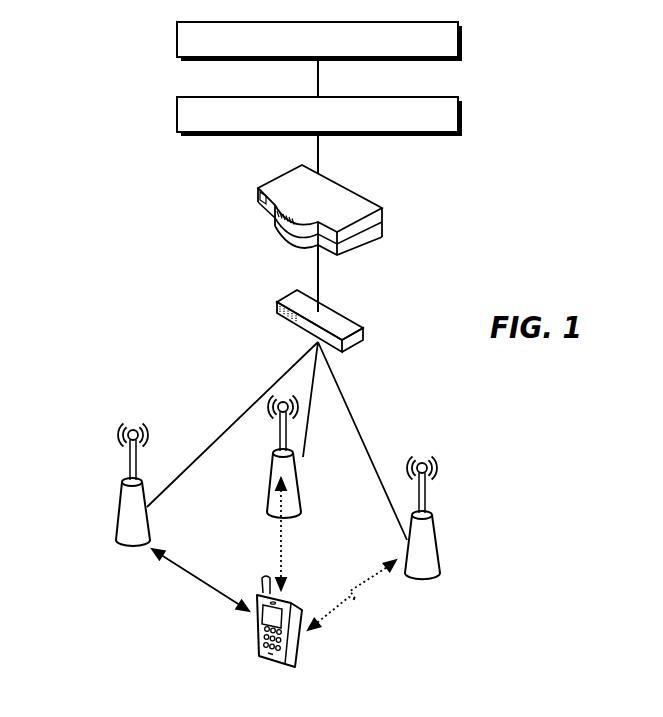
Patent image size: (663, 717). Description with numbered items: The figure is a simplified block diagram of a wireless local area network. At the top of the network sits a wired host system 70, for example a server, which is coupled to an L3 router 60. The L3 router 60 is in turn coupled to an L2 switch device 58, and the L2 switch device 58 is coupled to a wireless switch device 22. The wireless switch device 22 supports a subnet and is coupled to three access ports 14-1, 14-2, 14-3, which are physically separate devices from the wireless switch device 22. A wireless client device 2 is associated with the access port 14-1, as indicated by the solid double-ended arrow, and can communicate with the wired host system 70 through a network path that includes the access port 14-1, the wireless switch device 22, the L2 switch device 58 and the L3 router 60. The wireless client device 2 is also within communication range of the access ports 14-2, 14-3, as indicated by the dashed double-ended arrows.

The wired host system 70 is at (177, 35).
The L3 router 60 is at (177, 111).
The L2 switch device 58 is at (275, 232).
The wireless switch device 22 is at (295, 330).
The access port 14-1 is at (117, 520).
The access port 14-2 is at (268, 492).
The access port 14-3 is at (440, 555).
The wireless client device 2 is at (257, 626).